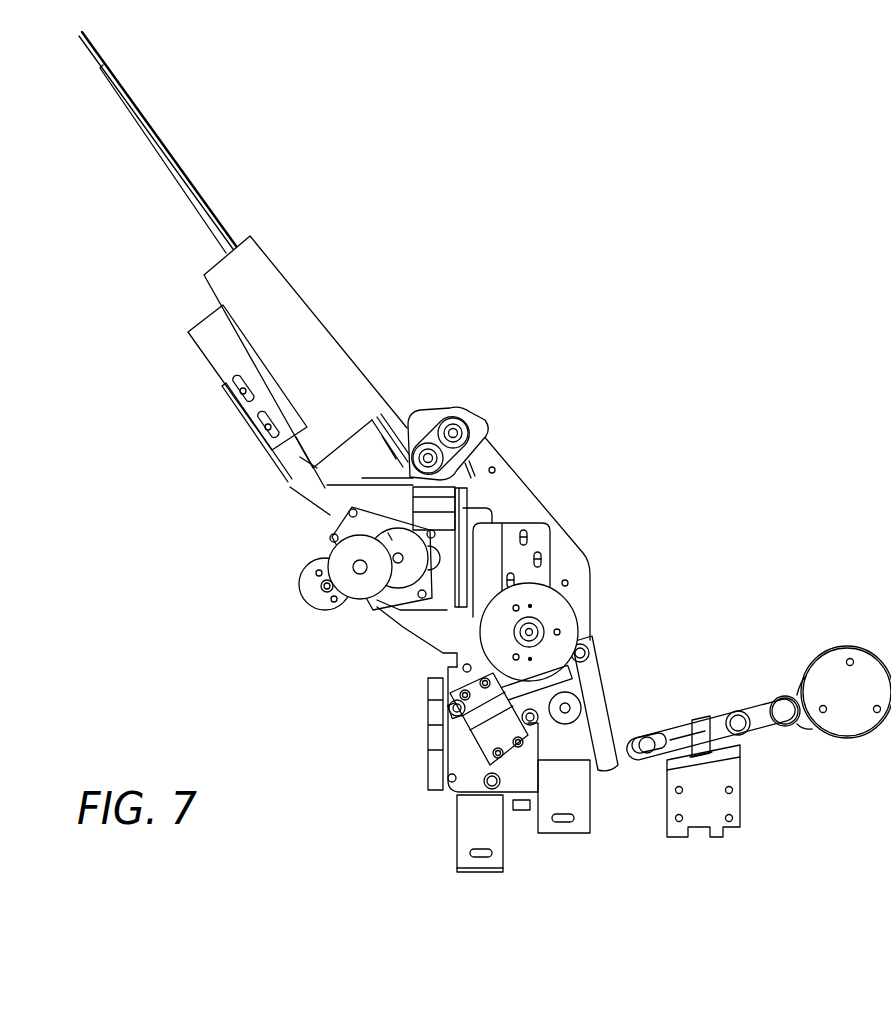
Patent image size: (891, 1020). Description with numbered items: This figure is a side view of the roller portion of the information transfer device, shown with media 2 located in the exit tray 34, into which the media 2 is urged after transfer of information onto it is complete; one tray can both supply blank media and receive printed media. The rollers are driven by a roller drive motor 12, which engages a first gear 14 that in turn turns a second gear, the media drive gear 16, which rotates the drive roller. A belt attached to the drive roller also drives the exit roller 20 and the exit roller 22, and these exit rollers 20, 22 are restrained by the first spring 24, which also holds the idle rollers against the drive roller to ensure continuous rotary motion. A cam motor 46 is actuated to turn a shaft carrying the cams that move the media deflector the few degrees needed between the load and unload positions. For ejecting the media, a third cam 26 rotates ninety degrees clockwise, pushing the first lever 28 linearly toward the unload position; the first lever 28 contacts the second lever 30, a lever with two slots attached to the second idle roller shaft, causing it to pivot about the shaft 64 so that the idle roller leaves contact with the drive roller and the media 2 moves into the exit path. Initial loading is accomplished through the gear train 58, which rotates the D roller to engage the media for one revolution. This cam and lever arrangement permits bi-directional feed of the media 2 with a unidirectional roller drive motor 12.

The media 2 is at (170, 157).
The exit tray 34 is at (128, 110).
The roller drive motor 12 is at (450, 718).
The first gear 14 is at (590, 667).
The media drive gear 16 is at (565, 598).
The exit roller 20 is at (453, 433).
The exit roller 22 is at (482, 450).
The first spring 24 is at (425, 412).
The third cam 26 is at (836, 648).
The first lever 28 is at (755, 707).
The second lever 30 is at (605, 722).
The cam motor 46 is at (312, 603).
The gear train 58 is at (360, 594).
The shaft 64 is at (600, 640).